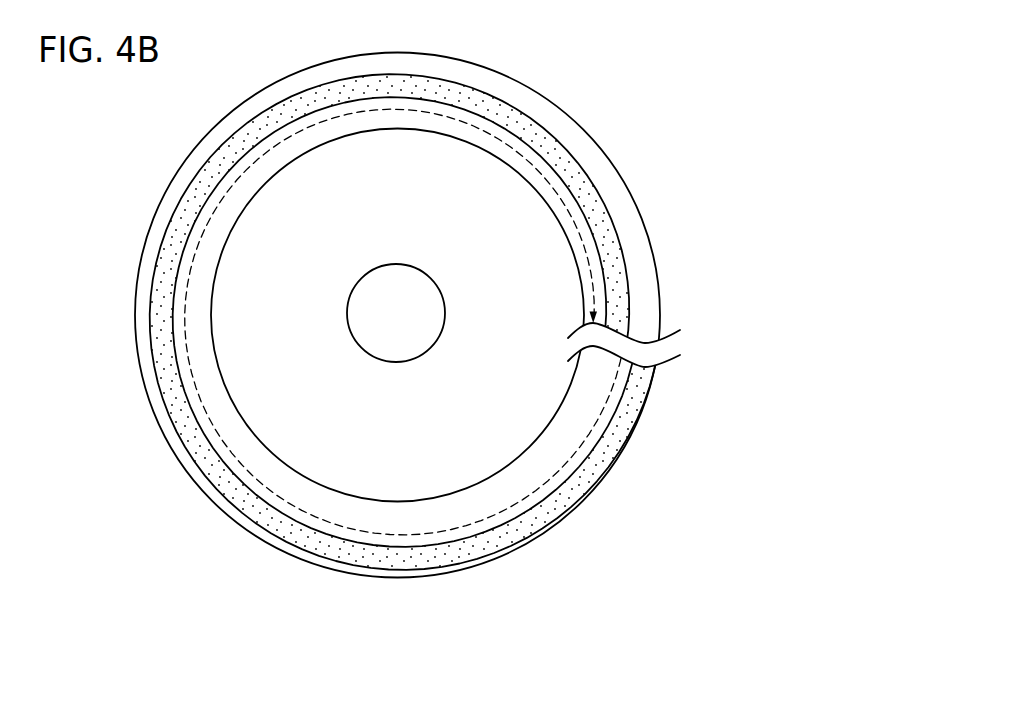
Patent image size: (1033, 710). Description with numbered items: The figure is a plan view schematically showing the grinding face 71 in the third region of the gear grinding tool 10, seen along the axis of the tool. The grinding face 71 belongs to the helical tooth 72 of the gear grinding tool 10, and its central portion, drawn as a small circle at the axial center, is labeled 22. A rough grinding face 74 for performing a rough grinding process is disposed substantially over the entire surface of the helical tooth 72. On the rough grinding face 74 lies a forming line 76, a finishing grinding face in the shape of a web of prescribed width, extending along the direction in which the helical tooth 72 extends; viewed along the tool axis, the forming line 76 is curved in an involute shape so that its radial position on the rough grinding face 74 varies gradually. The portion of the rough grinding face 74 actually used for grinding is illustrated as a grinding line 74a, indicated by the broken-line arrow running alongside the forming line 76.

The gear grinding tool 10 is at (608, 97).
The shaft 22 is at (422, 288).
The grinding face 71 is at (635, 234).
The helical tooth 72 is at (608, 153).
The rough grinding face 74 is at (369, 124).
The grinding line 74a is at (432, 112).
The forming line 76 is at (398, 82).